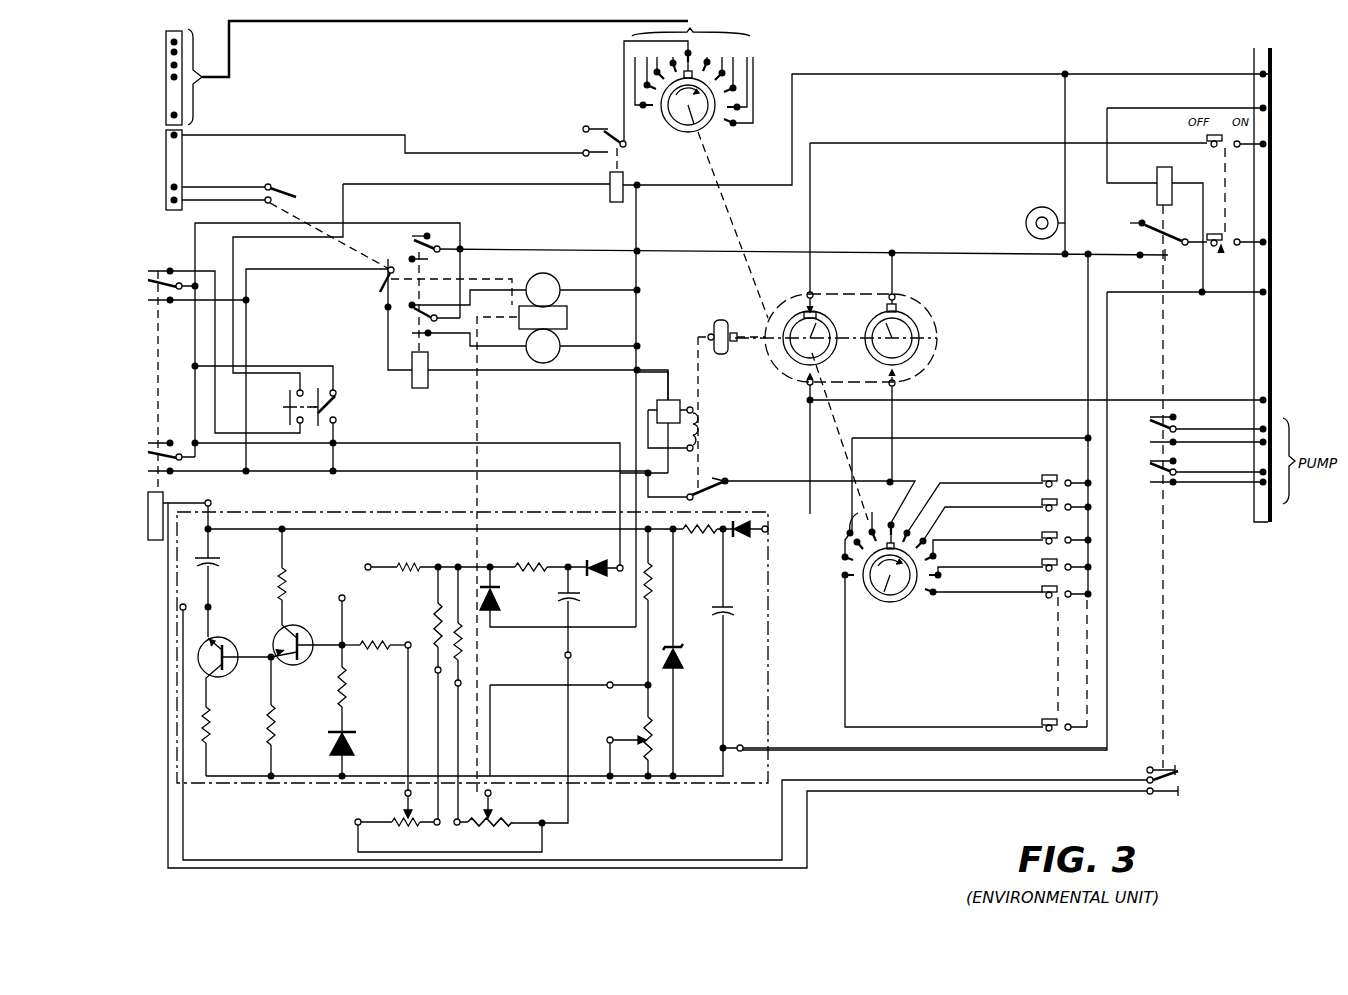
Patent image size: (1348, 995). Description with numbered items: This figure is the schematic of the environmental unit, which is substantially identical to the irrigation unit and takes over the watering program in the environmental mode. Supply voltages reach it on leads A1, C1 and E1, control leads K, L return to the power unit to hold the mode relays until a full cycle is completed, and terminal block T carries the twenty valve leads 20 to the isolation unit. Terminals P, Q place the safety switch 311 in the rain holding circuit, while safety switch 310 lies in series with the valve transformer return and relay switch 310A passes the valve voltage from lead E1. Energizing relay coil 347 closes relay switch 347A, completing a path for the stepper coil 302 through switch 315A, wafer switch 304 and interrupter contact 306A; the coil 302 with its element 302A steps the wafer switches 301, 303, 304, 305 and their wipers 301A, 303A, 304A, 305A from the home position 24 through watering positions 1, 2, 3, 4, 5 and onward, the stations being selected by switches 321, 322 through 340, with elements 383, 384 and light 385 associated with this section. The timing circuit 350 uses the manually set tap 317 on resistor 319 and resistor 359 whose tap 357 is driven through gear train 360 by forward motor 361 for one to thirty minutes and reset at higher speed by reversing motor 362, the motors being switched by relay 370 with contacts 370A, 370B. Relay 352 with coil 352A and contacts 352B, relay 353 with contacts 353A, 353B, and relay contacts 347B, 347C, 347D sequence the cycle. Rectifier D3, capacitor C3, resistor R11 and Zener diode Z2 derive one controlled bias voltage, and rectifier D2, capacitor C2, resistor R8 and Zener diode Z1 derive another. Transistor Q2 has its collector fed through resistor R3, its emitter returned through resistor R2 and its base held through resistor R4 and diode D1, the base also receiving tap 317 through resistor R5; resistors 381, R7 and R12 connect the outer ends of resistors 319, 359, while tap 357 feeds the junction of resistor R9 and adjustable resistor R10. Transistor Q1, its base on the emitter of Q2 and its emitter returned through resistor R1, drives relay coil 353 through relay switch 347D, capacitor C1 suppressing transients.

The T leads T is at (413, 73).
The lead E1 is at (164, 135).
The rain collecting pan P is at (164, 187).
The terminal Q is at (166, 200).
The safety switch 311 is at (298, 192).
The relay contacts 310A is at (618, 133).
The safety switch 310 is at (608, 180).
The rotary selector switch 301 is at (718, 134).
The switch wiper 301A is at (682, 132).
The 20T leads 20 is at (643, 110).
The home position 24 is at (707, 69).
The station 1 is at (722, 57).
The switch position 2 is at (747, 73).
The switch position 3 is at (747, 88).
The switch position 4 is at (753, 107).
The switch position 5 is at (753, 123).
The control circuit 350 is at (287, 502).
The relay contacts 353A is at (146, 285).
The relay contacts 353B is at (146, 458).
The relay coil 353 is at (150, 540).
The relay coil 352A is at (289, 390).
The relay contacts 352B is at (345, 400).
The relay 352 is at (350, 415).
The relay coil 370 is at (428, 388).
The relay contacts 370A is at (386, 322).
The relay contacts 370B is at (436, 242).
The forward motor 361 is at (560, 288).
The gear unit 360 is at (567, 316).
The reverse motor 362 is at (562, 334).
The thermal element 302A is at (668, 400).
The stepper coil 302 is at (704, 428).
The switch contacts 306A is at (712, 491).
The thermostat 383 is at (714, 324).
The thermostat lead 384 is at (728, 354).
The wafer switch 303 is at (760, 315).
The gauge contact 303A is at (822, 314).
The wafer switch 304 is at (938, 340).
The gauge contact 304A is at (920, 316).
The indicator lamp 385 is at (1036, 210).
The relay coil 347 is at (1157, 178).
The relay switch 347A is at (1162, 236).
The relay contacts 347B is at (1148, 432).
The relay contacts 347C is at (1150, 470).
The relay contacts 347D is at (1180, 784).
The on-off switch 315A is at (1222, 255).
The station selecting switch 321 is at (1042, 484).
The switch contacts 322 is at (1050, 508).
The station selecting switch 340 is at (1050, 732).
The rotary selector switch 305 is at (887, 613).
The switch wiper 305A is at (910, 600).
The transient suppression capacitor C1 is at (226, 570).
The transistor Q1 is at (234, 662).
The transistor Q2 is at (307, 627).
The resistor R1 is at (214, 716).
The resistor R2 is at (278, 714).
The resistor R3 is at (290, 572).
The resistor R4 is at (346, 692).
The diode D1 is at (356, 743).
The resistor R5 is at (396, 628).
The resistor 381 is at (468, 554).
The resistor R12 is at (440, 600).
The resistor R7 is at (464, 650).
The resistor R8 is at (546, 558).
The rectifier D2 is at (608, 558).
The Zener diode Z1 is at (502, 602).
The capacitor C2 is at (584, 600).
The resistor R9 is at (658, 586).
The adjustable resistor R10 is at (644, 732).
The Zener diode Z2 is at (686, 670).
The resistor R11 is at (683, 536).
The rectifier D3 is at (739, 546).
The capacitor C3 is at (724, 616).
The tap 317 is at (408, 804).
The potentiometer 319 is at (406, 826).
The tap 357 is at (493, 796).
The potentiometer 359 is at (468, 826).
The lead A1 is at (1272, 108).
The control lead K is at (1272, 144).
The control lead L is at (1272, 400).